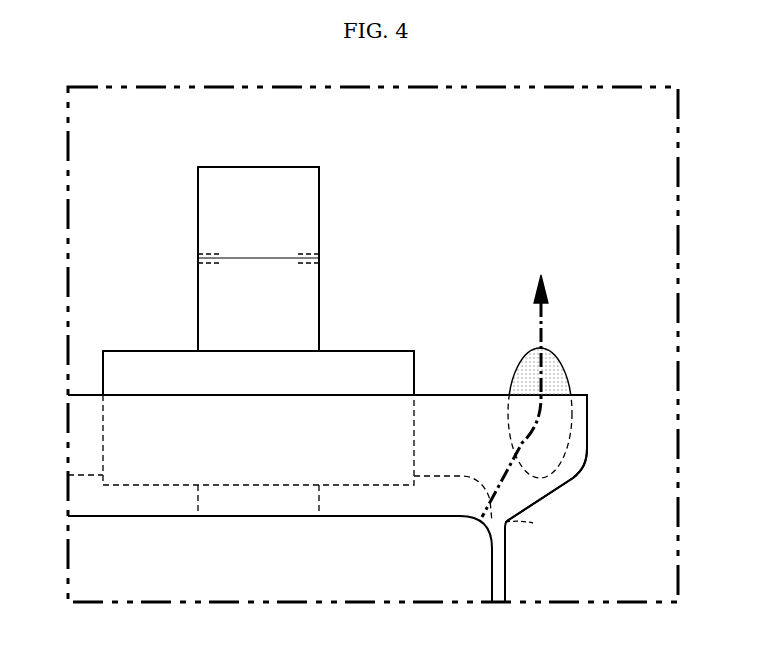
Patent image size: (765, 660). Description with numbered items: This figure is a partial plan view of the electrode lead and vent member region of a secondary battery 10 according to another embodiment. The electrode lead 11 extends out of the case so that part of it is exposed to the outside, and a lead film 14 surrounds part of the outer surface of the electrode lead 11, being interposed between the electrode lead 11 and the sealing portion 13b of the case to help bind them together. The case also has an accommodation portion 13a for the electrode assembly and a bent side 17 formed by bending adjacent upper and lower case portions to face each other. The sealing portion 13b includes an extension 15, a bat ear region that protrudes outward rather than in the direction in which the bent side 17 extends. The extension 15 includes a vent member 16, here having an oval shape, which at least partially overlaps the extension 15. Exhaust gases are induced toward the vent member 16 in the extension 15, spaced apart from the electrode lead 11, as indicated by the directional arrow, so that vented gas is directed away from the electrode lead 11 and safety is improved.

The secondary battery 10 is at (618, 156).
The electrode lead 11 is at (315, 276).
The lead film 14 is at (356, 357).
The sealing portion 13b is at (453, 408).
The accommodation portion 13a is at (533, 523).
The extension 15 is at (570, 477).
The vent member 16 is at (530, 361).
The bent side 17 is at (505, 577).